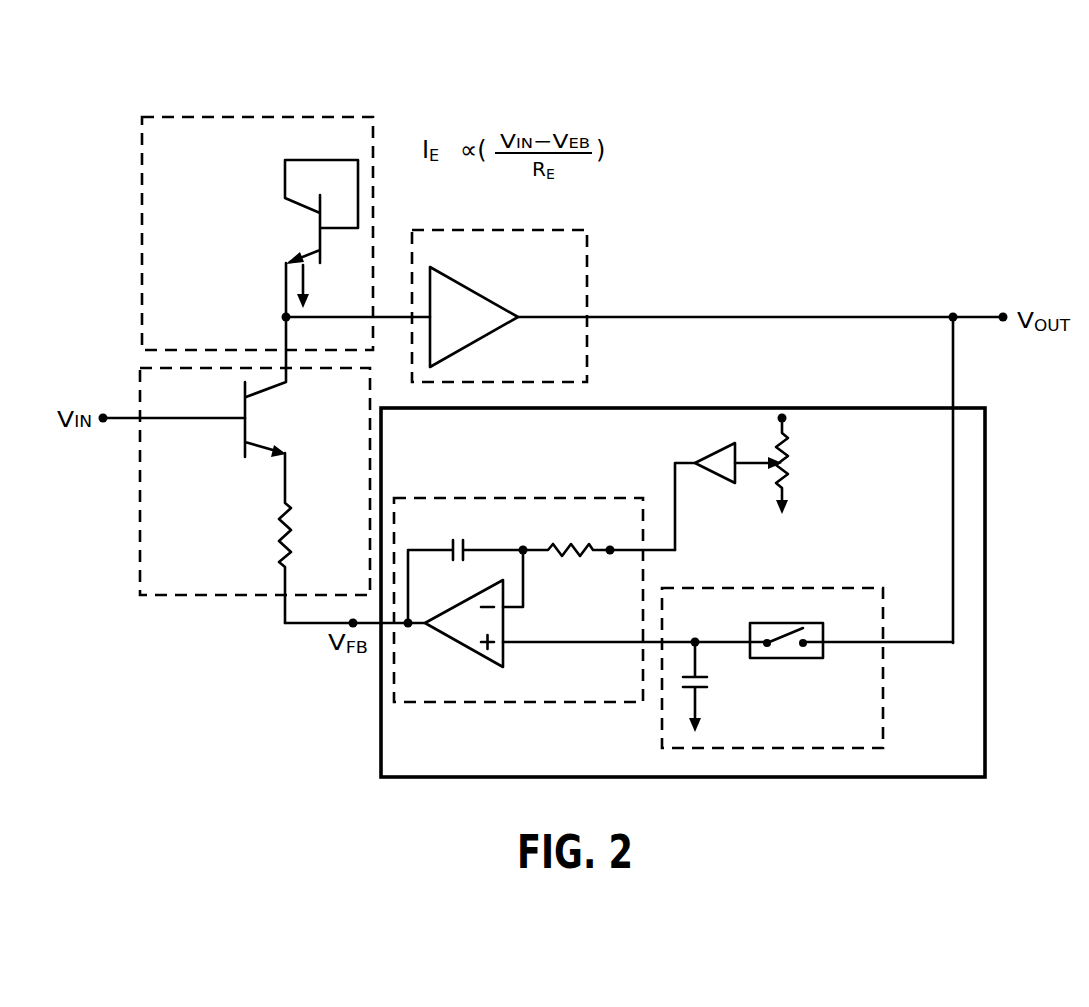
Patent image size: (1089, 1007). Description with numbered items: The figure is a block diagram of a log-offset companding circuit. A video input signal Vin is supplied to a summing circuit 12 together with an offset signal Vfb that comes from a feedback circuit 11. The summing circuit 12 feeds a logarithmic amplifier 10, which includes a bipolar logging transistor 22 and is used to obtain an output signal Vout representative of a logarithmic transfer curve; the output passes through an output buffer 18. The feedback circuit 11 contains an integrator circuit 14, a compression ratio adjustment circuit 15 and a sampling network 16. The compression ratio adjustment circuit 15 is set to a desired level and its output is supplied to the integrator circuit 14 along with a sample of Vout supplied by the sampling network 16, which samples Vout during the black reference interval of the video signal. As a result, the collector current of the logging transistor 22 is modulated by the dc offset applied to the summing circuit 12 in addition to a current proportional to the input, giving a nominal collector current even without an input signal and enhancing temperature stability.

The logarithmic amplifier 10 is at (216, 113).
The bipolar logging transistor 22 is at (320, 230).
The summing circuit 12 is at (140, 488).
The output buffer 18 is at (597, 263).
The feedback circuit 11 is at (660, 408).
The integrator circuit 14 is at (467, 497).
The compression ratio adjustment circuit 15 is at (727, 484).
The sampling network 16 is at (787, 588).